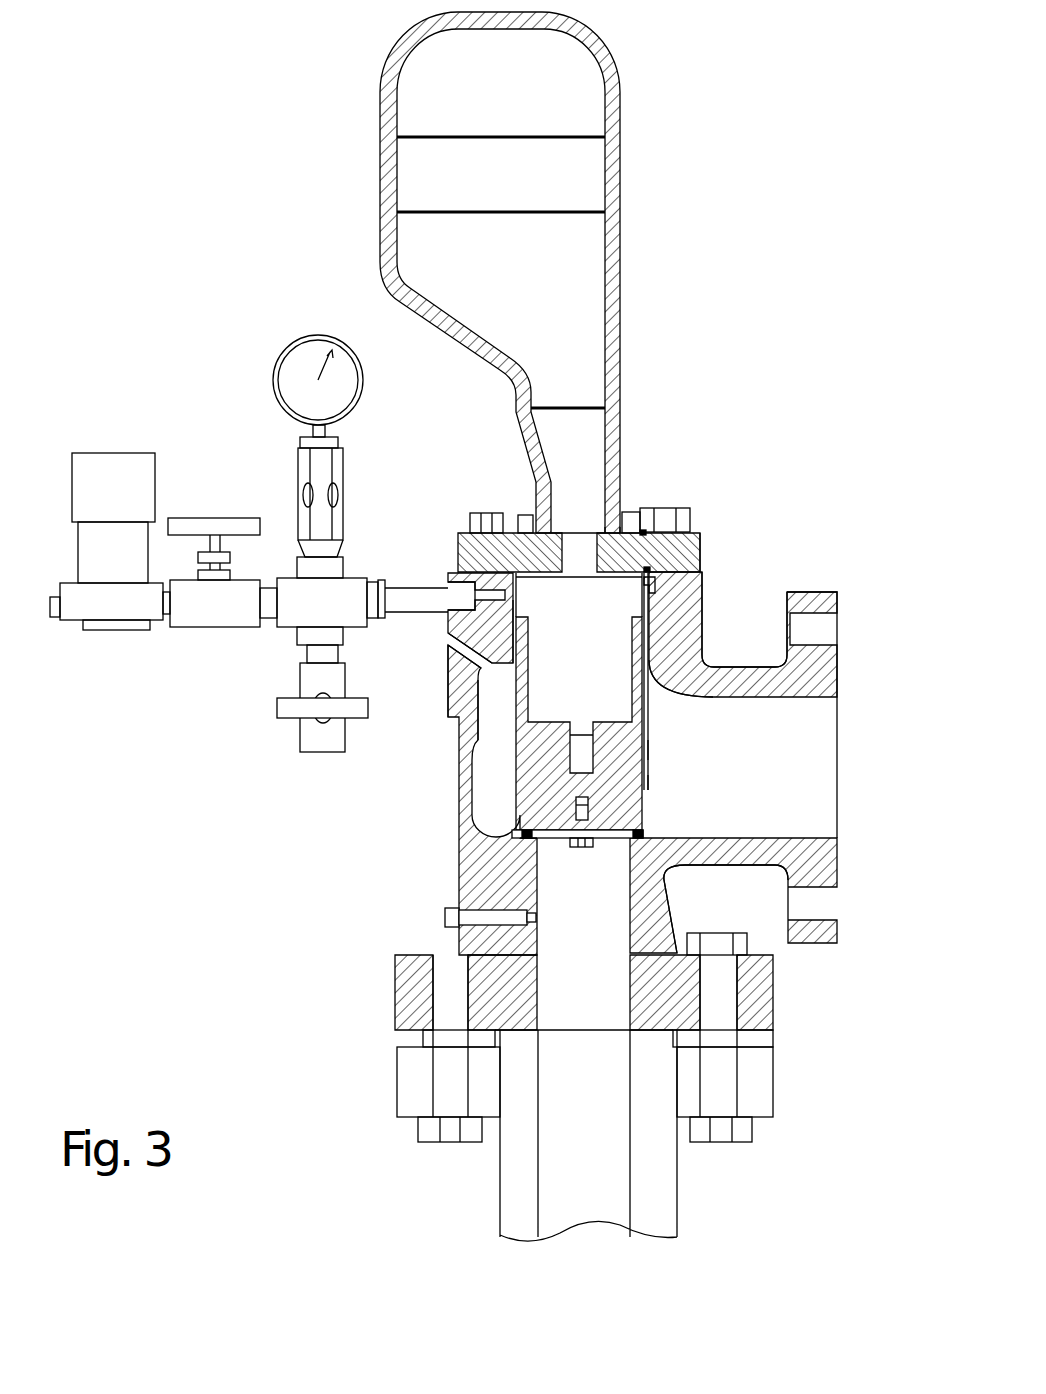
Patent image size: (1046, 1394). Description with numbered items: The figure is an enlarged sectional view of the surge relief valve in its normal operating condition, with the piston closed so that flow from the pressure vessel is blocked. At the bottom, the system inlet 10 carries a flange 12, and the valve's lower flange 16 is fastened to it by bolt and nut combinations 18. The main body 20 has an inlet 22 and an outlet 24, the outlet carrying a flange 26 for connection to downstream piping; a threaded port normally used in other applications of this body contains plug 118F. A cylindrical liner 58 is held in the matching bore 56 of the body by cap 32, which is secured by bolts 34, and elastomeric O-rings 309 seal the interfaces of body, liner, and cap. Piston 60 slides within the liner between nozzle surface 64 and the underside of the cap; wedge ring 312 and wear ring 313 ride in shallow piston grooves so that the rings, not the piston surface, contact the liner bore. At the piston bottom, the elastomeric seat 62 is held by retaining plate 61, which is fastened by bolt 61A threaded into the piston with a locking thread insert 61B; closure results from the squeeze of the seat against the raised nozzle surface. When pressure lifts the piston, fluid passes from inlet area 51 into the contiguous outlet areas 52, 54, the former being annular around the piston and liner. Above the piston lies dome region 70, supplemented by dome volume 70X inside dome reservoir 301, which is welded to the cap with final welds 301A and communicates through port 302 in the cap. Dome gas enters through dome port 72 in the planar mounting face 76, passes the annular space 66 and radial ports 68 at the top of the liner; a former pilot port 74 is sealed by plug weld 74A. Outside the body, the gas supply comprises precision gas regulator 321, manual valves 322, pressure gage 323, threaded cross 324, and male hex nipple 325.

The inlet 10 is at (507, 1175).
The flange 12 is at (405, 1085).
The lower flange 16 is at (395, 1010).
The bolt and nut combinations 18 is at (718, 1132).
The main body 20 is at (458, 790).
The inlet 22 is at (672, 927).
The outlet 24 is at (758, 662).
The flange 26 is at (832, 592).
The cap 32 is at (700, 532).
The bolts 34 is at (682, 520).
The inlet area 51 is at (569, 1004).
The outlet area 52 is at (479, 814).
The outlet area 54 is at (712, 817).
The bore 56 is at (651, 667).
The liner 58 is at (649, 752).
The piston 60 is at (516, 775).
The retaining plate 61 is at (510, 870).
The bolt 61A is at (586, 847).
The locking thread insert 61B is at (512, 831).
The seat 62 is at (518, 842).
The nozzle surface 64 is at (637, 838).
The annular space 66 is at (467, 533).
The radial ports 68 is at (510, 533).
The dome region 70 is at (563, 680).
The dome volume 70X is at (544, 289).
The dome port 72 is at (450, 582).
The port 74 is at (490, 668).
The plug weld 74A is at (450, 642).
The outer planar mounting face 76 is at (448, 700).
The plug 118F is at (445, 928).
The dome reservoir 301 is at (617, 292).
The final welds 301A is at (617, 207).
The port 302 is at (620, 527).
The O-rings 309 is at (650, 570).
The wedge ring 312 is at (652, 625).
The wear ring 313 is at (648, 785).
The precision gas regulator 321 is at (130, 475).
The manual valves 322 is at (298, 490).
The pressure gage 323 is at (305, 365).
The threaded cross 324 is at (308, 625).
The male hex nipple 325 is at (385, 578).